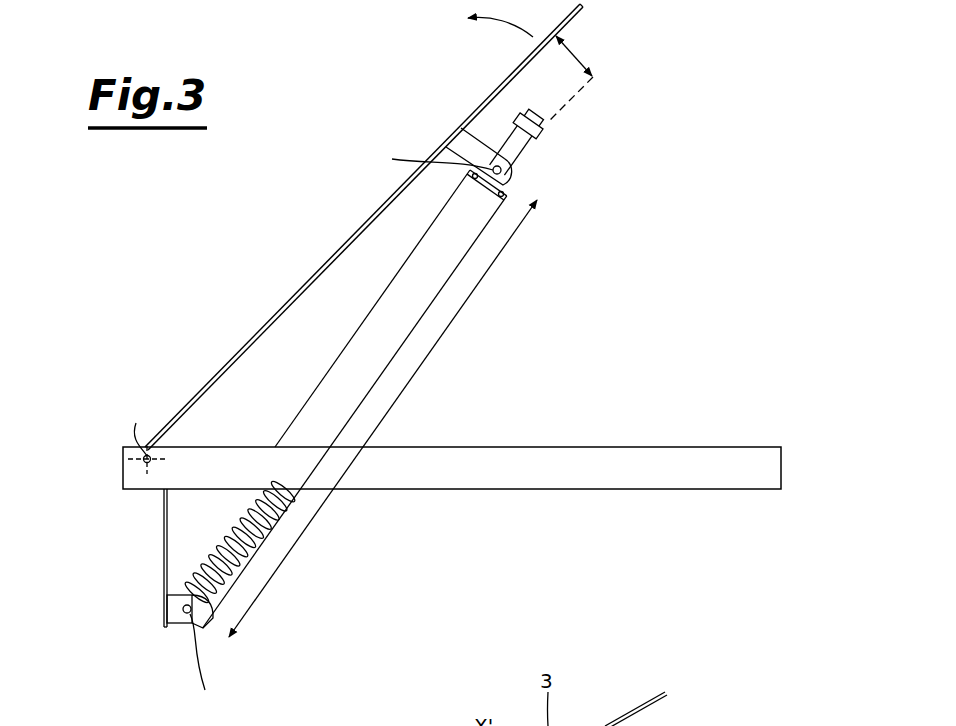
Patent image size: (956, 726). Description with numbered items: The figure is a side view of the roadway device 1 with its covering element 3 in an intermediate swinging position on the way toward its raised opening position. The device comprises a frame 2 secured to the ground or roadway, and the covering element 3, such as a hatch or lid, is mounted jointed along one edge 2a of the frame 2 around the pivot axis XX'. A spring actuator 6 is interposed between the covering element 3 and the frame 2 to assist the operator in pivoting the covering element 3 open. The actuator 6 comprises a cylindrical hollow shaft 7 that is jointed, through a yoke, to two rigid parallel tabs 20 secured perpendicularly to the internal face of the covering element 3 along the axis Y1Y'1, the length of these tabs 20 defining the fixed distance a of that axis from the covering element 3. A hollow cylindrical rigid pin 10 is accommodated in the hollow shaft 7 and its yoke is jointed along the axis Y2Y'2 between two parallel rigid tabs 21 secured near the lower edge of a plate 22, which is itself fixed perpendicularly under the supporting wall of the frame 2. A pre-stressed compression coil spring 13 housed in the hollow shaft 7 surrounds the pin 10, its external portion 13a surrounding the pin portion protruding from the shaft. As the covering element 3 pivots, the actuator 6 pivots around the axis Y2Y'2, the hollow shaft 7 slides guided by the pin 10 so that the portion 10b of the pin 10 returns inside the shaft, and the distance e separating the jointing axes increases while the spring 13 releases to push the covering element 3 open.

The roadway device 1 is at (260, 290).
The frame 2 is at (600, 444).
The edge of the frame 2a is at (121, 461).
The covering element 3 is at (358, 221).
The spring actuator 6 is at (372, 309).
The cylindrical hollow shaft 7 is at (442, 244).
The pin 10 is at (303, 399).
The portion of the guide tube 10b is at (528, 148).
The spring 13 is at (262, 552).
The external portion of the spring 13a is at (243, 510).
The tabs 20 is at (472, 147).
The tabs 21 is at (176, 609).
The plate 22 is at (164, 536).
The fixed distance of axis Y1Y'1 relative to the covering element a is at (573, 52).
The distance separating the axes e is at (383, 420).